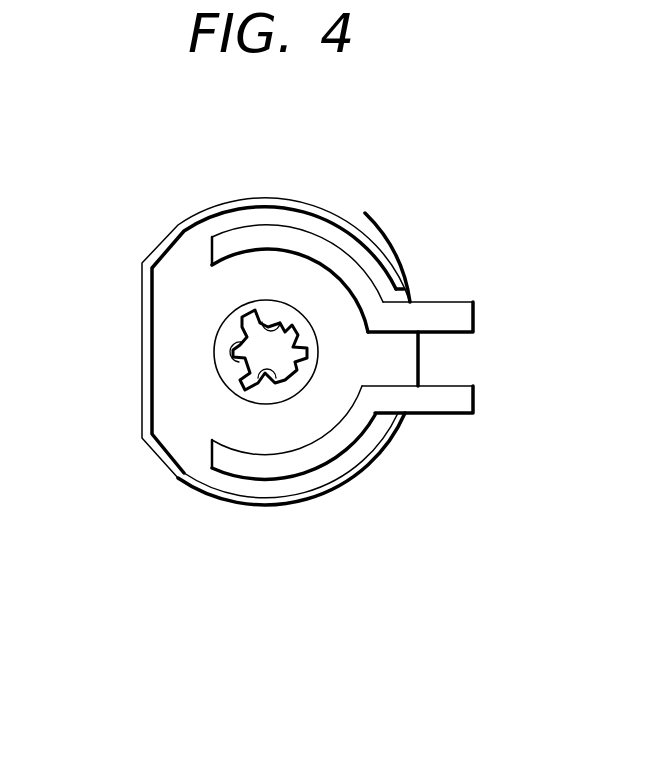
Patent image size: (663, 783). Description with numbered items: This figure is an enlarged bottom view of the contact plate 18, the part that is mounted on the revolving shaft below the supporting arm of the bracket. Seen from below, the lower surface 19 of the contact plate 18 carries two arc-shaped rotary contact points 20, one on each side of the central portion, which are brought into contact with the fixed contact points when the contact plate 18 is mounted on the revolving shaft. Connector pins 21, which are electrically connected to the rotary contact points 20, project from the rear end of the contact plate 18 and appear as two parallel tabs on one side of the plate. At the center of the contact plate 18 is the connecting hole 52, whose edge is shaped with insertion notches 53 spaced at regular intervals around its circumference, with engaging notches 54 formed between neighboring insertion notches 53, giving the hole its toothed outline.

The contact plate 18 is at (212, 183).
The lower surface 19 is at (332, 408).
The rotary contact points 20 is at (300, 237).
The connector pins 21 is at (463, 315).
The connecting hole 52 is at (230, 335).
The insertion notches 53 is at (233, 330).
The engaging notches 54 is at (272, 320).